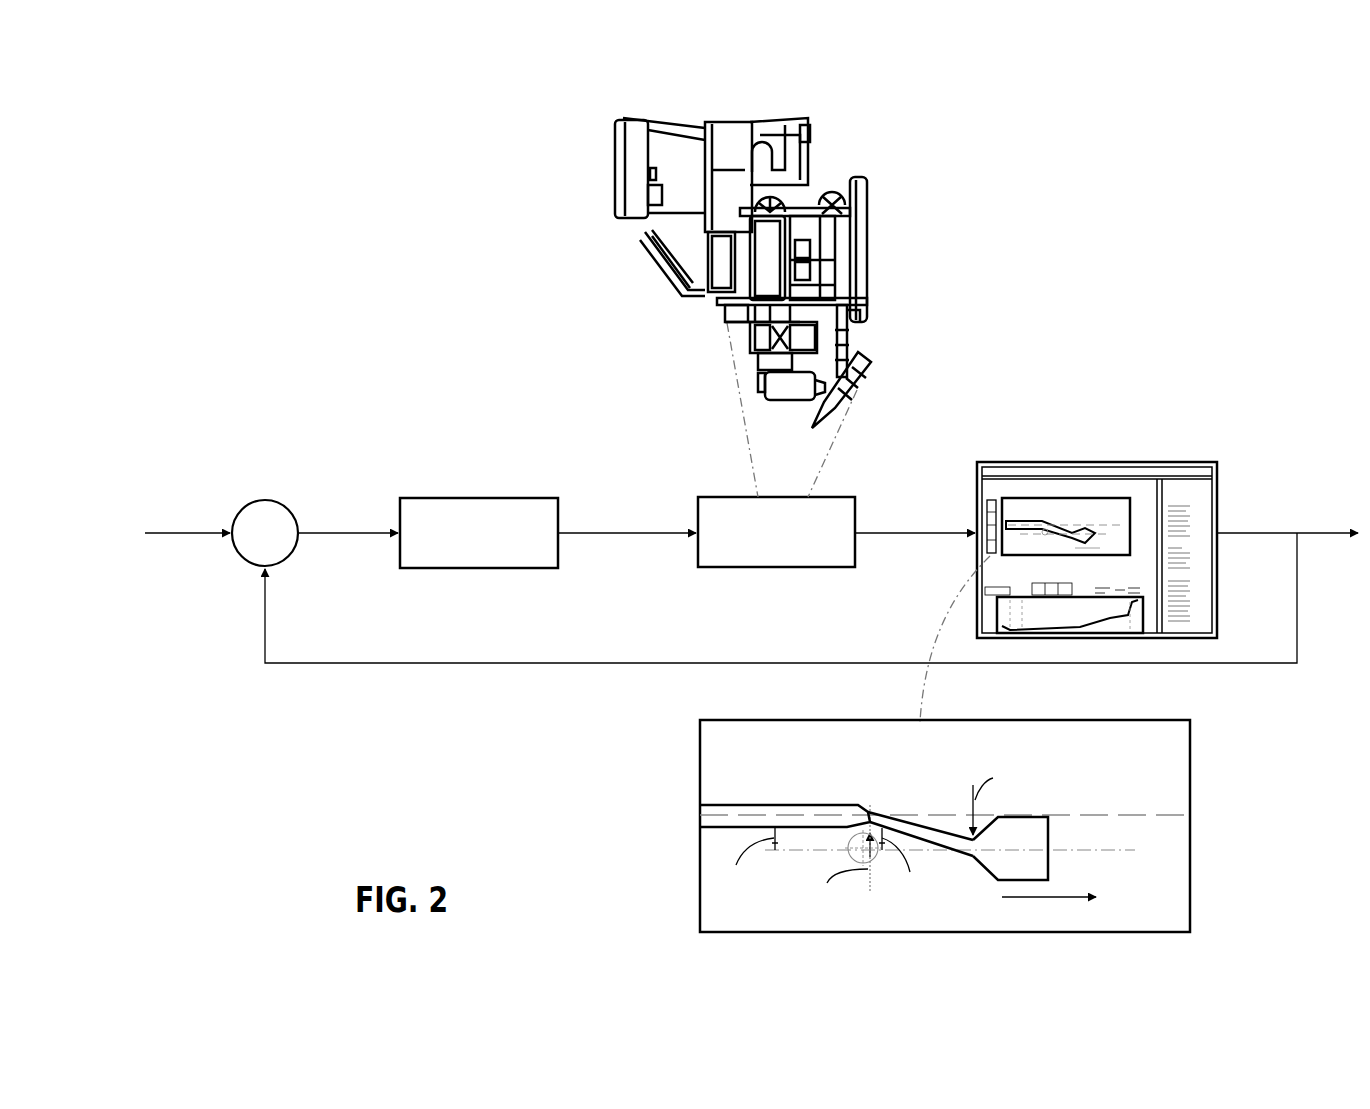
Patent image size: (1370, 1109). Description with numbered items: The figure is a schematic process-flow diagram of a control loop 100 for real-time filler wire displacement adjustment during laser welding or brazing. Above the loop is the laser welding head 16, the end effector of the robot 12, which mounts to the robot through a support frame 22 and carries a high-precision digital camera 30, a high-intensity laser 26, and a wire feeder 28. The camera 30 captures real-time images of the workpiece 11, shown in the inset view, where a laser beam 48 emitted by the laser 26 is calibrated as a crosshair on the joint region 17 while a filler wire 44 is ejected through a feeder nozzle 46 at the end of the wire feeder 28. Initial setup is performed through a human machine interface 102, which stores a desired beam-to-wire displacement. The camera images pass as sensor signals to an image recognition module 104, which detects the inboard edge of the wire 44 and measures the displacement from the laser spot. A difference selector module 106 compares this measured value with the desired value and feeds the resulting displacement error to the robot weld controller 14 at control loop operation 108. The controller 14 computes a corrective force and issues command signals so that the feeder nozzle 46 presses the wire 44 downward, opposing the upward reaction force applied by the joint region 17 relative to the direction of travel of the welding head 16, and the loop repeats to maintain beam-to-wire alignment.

The control loop 100 is at (258, 184).
The human machine interface 102 is at (708, 497).
The image recognition module 104 is at (1197, 462).
The difference selector module 106 is at (251, 500).
The control loop operation 108 is at (432, 498).
The robot 12 is at (792, 549).
The robot weld controller 14 is at (493, 549).
The laser welding head 16 is at (649, 319).
The support frame 22 is at (668, 270).
The digital camera 30 is at (704, 292).
The high-intensity laser 26 is at (762, 379).
The wire feeder 28 is at (836, 388).
The workpiece 11 is at (1176, 720).
The joint region 17 is at (750, 815).
The laser beam 48 is at (856, 832).
The filler wire 44 is at (938, 820).
The feeder nozzle 46 is at (1040, 817).